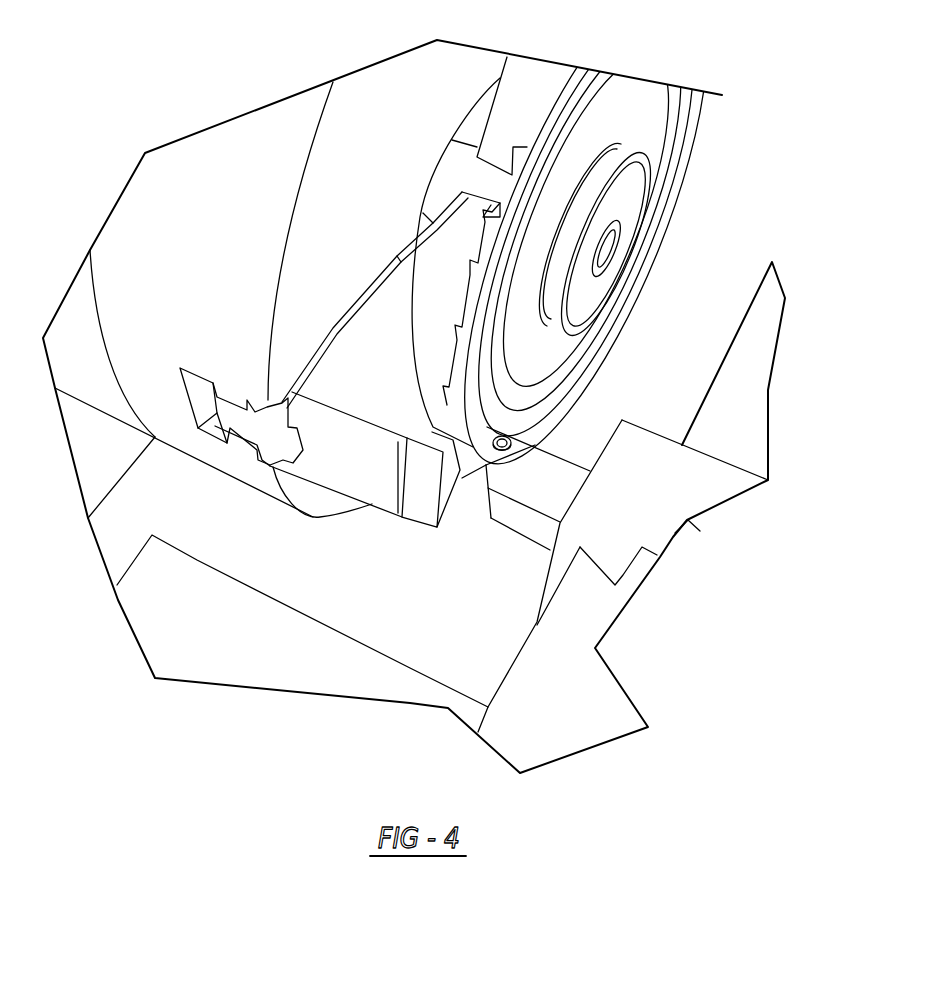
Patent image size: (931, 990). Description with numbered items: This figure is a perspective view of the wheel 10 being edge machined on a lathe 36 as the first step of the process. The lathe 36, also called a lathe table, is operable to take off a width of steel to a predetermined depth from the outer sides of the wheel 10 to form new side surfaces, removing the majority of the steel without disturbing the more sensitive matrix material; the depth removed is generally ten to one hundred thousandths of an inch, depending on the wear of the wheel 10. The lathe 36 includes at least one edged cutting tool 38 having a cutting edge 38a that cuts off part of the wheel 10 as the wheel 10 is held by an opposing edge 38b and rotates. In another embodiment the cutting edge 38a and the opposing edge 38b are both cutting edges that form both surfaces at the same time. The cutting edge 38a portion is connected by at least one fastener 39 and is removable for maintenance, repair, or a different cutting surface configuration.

The wheel 10 is at (693, 183).
The lathe 36 is at (422, 682).
The edged cutting tool 38 is at (482, 511).
The cutting edge 38a is at (460, 468).
The opposing edge 38b is at (422, 330).
The fastener 39 is at (510, 437).